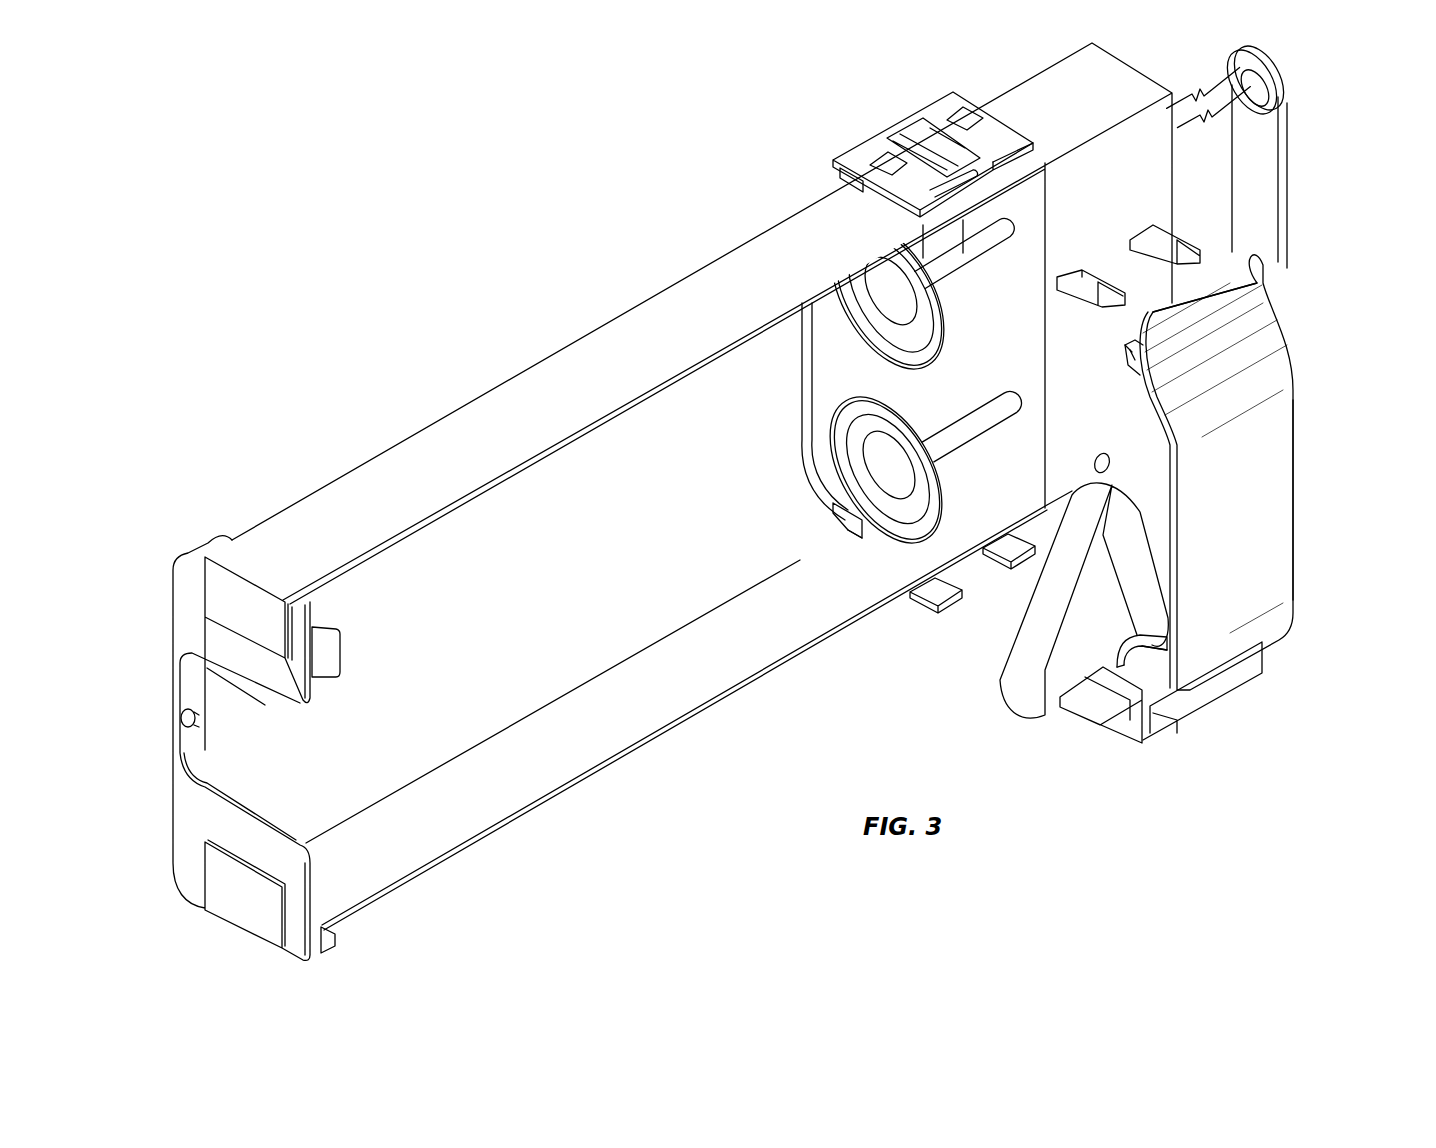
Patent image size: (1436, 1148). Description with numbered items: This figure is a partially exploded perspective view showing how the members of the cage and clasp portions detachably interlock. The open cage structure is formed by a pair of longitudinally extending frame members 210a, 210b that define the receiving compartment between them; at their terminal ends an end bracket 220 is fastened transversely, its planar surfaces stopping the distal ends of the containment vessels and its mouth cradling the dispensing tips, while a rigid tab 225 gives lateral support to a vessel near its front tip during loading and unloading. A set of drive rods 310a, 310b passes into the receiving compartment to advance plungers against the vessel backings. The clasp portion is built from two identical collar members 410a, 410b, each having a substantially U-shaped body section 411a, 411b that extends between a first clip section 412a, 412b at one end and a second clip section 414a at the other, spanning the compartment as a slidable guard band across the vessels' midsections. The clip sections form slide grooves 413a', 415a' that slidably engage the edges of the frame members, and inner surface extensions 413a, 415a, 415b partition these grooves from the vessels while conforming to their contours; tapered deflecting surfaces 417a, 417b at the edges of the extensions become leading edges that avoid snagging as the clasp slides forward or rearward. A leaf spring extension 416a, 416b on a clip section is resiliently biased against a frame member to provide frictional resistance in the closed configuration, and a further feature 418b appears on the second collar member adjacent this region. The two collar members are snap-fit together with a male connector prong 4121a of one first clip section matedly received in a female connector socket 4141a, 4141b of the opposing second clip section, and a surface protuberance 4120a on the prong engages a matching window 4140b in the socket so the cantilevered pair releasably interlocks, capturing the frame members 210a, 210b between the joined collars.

The frame member 210a is at (415, 517).
The frame member 210b is at (583, 757).
The end bracket 220 is at (292, 697).
The tab 225 is at (333, 653).
The drive rod 310a is at (1287, 92).
The drive rod 310b is at (987, 417).
The collar member 410a is at (1250, 513).
The collar member 410b is at (828, 385).
The body section 411a is at (1260, 413).
The body section 411b is at (827, 357).
The first clip section 412a is at (1218, 323).
The first clip section 412b is at (1000, 550).
The extension 413a is at (1099, 388).
The slide groove 413a' is at (1055, 326).
The second clip section 414a is at (1205, 690).
The extension 415a is at (1187, 720).
The slide groove 415a' is at (1032, 712).
The extension 415b is at (870, 540).
The leaf spring extension 416a is at (1147, 643).
The leaf spring extension 416b is at (950, 160).
The tapered deflecting surface 417a is at (910, 558).
The tapered deflecting surface 417b is at (850, 520).
The retaining tab 418b is at (863, 187).
The surface protuberance 4120a is at (1177, 243).
The male connector prong 4121a is at (1203, 263).
The window 4140b is at (887, 165).
The female connector socket 4141a is at (1098, 723).
The female connector socket 4141b is at (1013, 133).